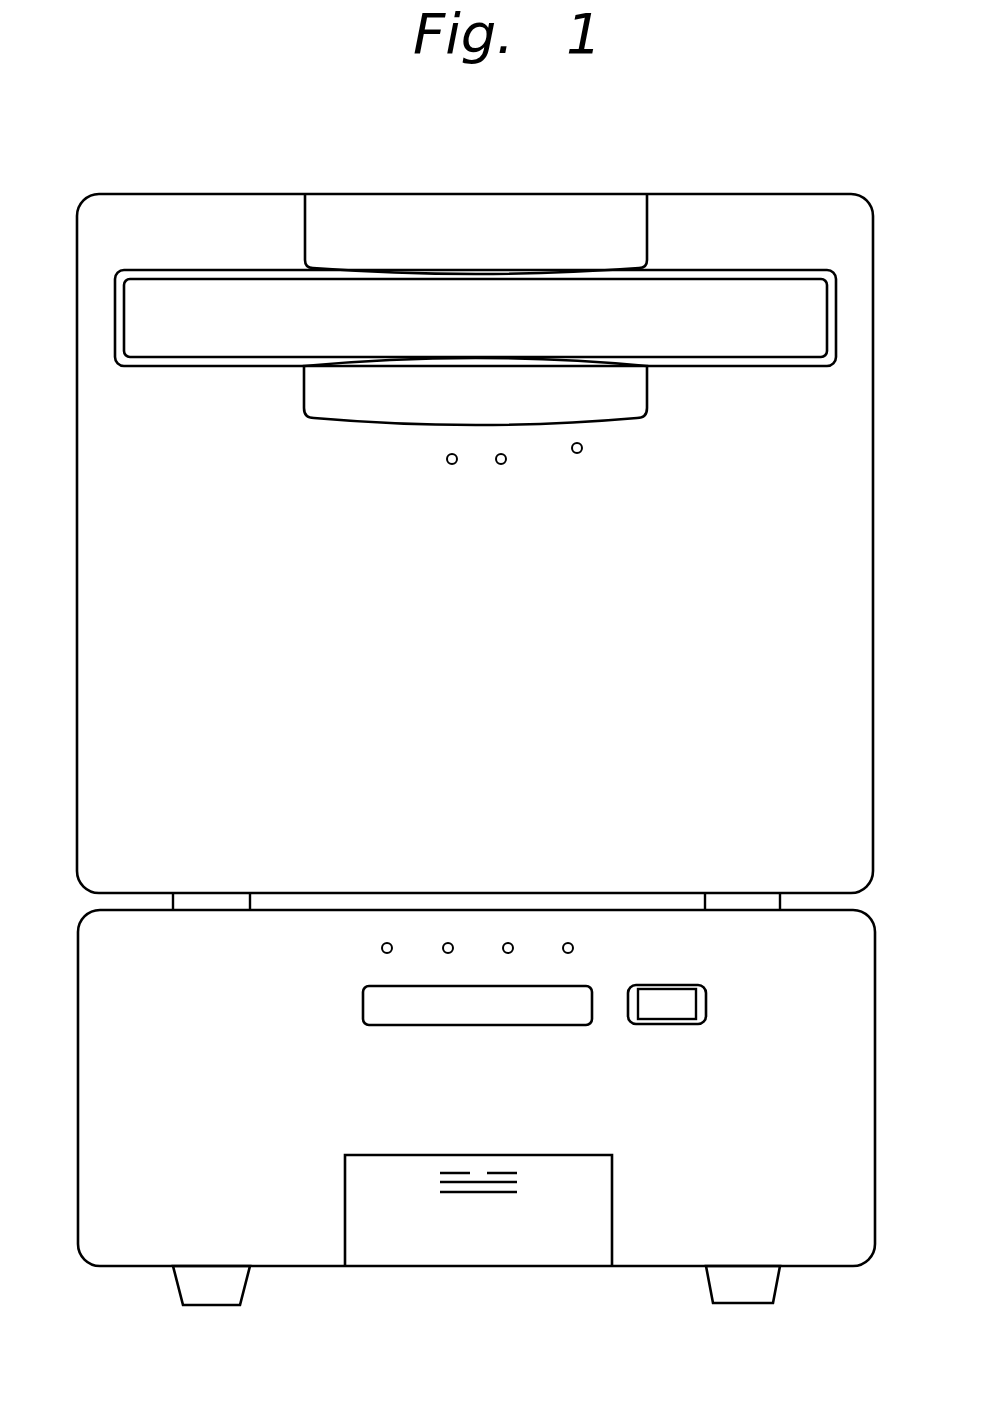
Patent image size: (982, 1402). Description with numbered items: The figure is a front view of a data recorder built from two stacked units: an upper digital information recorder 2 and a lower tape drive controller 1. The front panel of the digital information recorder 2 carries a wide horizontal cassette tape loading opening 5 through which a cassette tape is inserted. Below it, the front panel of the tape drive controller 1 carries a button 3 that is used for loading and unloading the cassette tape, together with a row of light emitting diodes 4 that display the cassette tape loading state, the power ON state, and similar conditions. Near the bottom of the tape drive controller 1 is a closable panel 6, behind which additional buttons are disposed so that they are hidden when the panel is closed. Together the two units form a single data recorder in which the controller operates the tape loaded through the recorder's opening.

The tape drive controller 1 is at (643, 1266).
The digital information recorder 2 is at (668, 193).
The button 3 is at (684, 1004).
The light emitting diodes 4 is at (466, 969).
The cassette tape loading opening 5 is at (707, 325).
The closable panel 6 is at (497, 1230).